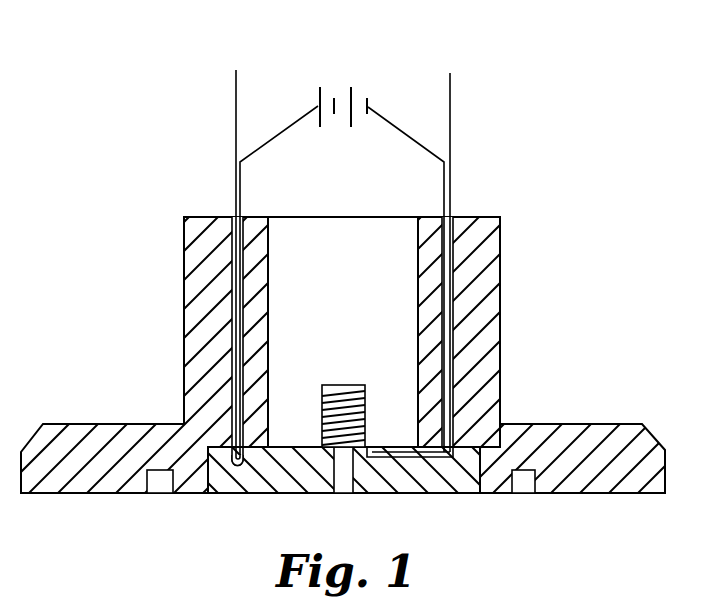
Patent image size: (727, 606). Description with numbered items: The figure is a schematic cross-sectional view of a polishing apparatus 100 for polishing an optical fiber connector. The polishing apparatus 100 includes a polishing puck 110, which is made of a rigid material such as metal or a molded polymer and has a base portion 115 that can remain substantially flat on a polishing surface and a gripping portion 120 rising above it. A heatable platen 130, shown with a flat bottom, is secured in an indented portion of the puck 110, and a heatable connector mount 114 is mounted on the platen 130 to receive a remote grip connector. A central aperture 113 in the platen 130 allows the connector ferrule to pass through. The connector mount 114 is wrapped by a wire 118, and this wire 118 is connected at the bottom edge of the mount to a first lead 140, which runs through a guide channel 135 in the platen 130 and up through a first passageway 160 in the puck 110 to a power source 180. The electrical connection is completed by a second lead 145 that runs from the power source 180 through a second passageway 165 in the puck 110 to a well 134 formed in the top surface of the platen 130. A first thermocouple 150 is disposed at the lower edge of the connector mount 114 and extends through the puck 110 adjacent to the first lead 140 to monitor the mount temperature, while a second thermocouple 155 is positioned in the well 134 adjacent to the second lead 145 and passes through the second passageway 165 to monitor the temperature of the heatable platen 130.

The polishing apparatus 100 is at (483, 62).
The polishing puck 110 is at (503, 250).
The aperture 113 is at (341, 488).
The heatable connector mount 114 is at (362, 385).
The base portion 115 is at (576, 482).
The wire 118 is at (332, 385).
The gripping portion 120 is at (192, 258).
The heatable platen 130 is at (236, 490).
The well 134 is at (210, 450).
The guide channel 135 is at (415, 457).
The first lead 140 is at (397, 127).
The second lead 145 is at (284, 131).
The first thermocouple 150 is at (452, 108).
The second thermocouple 155 is at (236, 103).
The first passageway 160 is at (455, 222).
The second passageway 165 is at (230, 225).
The power source 180 is at (351, 94).